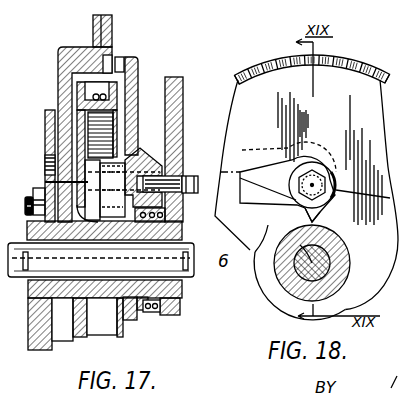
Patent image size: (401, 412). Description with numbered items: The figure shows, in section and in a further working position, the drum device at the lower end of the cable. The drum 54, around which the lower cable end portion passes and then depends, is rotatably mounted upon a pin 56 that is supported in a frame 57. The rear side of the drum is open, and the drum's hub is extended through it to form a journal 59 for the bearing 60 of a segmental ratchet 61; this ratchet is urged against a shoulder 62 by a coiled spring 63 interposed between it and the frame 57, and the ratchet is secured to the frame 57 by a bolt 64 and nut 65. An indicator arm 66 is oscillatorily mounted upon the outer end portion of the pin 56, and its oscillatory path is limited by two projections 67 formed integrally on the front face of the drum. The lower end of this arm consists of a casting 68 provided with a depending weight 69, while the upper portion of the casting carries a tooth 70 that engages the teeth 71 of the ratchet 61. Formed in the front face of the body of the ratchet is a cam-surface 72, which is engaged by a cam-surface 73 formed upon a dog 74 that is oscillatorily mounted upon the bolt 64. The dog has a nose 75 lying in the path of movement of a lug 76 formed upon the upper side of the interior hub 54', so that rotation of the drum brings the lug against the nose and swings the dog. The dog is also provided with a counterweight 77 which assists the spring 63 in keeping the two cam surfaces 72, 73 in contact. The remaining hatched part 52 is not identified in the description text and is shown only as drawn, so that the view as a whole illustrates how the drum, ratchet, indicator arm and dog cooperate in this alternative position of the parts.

In FIG. 17, the ball bearings 52 is at (96, 94).
In FIG. 17, the drum 54 is at (87, 331).
In FIG. 18, the interior hub 54' is at (267, 283).
In FIG. 17, the pin 56 is at (194, 260).
In FIG. 18, the pin 56 is at (295, 302).
In FIG. 17, the frame 57 is at (182, 112).
In FIG. 17, the journal 59 is at (133, 320).
In FIG. 17, the bearing 60 is at (183, 290).
In FIG. 17, the segmental ratchet 61 is at (139, 63).
In FIG. 18, the segmental ratchet 61 is at (251, 74).
In FIG. 17, the shoulder 62 is at (120, 298).
In FIG. 17, the coiled spring 63 is at (160, 313).
In FIG. 17, the bolt 64 is at (167, 175).
In FIG. 18, the bolt 64 is at (327, 160).
In FIG. 17, the nut 65 is at (190, 177).
In FIG. 17, the indicator arm 66 is at (97, 23).
In FIG. 17, the projections 67 is at (67, 172).
In FIG. 17, the casting 68 is at (58, 89).
In FIG. 17, the depending weight 69 is at (52, 350).
In FIG. 17, the tooth 70 is at (111, 55).
In FIG. 17, the teeth 71 is at (123, 58).
In FIG. 18, the teeth 71 is at (342, 66).
In FIG. 17, the cam-surface 72 is at (45, 182).
In FIG. 17, the cam-surface 73 is at (138, 163).
In FIG. 18, the cam-surface 73 is at (340, 170).
In FIG. 17, the dog 74 is at (53, 145).
In FIG. 18, the dog 74 is at (265, 150).
In FIG. 17, the nose 75 is at (25, 206).
In FIG. 18, the nose 75 is at (300, 216).
In FIG. 17, the lug 76 is at (62, 223).
In FIG. 18, the lug 76 is at (298, 228).
In FIG. 18, the counterweight 77 is at (221, 205).